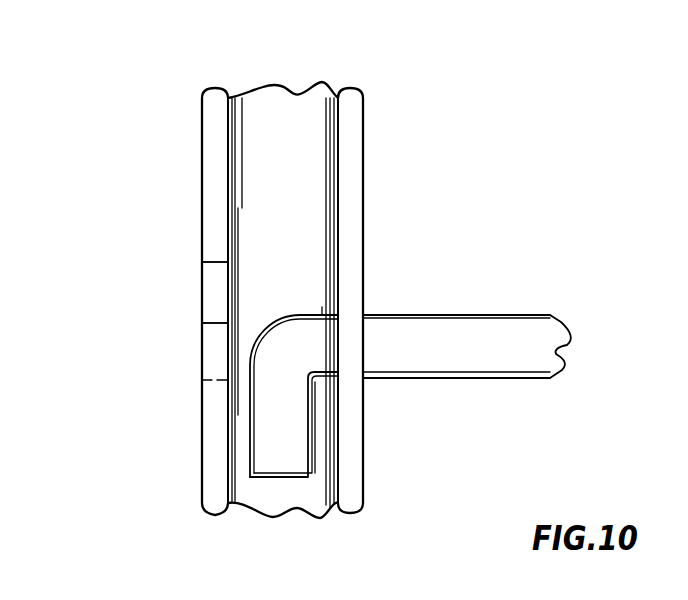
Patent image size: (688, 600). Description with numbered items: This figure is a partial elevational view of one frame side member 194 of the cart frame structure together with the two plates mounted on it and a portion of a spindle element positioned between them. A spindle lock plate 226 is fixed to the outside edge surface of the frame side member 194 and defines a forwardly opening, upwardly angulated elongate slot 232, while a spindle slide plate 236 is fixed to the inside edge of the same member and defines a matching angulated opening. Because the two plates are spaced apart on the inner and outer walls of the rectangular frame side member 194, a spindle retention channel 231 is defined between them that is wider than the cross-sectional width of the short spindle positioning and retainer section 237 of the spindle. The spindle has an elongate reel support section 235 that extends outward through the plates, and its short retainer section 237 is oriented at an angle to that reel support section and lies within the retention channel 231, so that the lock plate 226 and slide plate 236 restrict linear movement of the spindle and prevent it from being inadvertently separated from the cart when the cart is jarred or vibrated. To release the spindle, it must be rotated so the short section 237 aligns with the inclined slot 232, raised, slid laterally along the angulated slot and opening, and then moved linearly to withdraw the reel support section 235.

The frame side member 194 is at (263, 87).
The spindle lock plate 226 is at (215, 152).
The spindle retention channel 231 is at (285, 308).
The angulated elongate slot 232 is at (215, 288).
The elongate reel support section 235 is at (467, 327).
The spindle slide plate 236 is at (352, 202).
The short spindle positioning and retainer section 237 is at (292, 453).